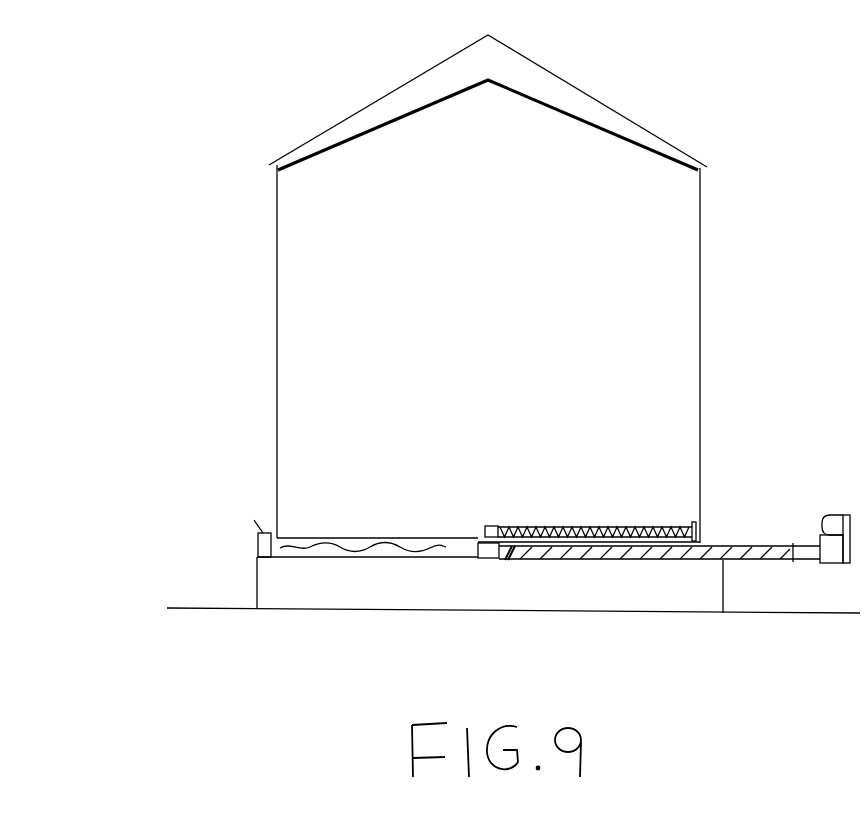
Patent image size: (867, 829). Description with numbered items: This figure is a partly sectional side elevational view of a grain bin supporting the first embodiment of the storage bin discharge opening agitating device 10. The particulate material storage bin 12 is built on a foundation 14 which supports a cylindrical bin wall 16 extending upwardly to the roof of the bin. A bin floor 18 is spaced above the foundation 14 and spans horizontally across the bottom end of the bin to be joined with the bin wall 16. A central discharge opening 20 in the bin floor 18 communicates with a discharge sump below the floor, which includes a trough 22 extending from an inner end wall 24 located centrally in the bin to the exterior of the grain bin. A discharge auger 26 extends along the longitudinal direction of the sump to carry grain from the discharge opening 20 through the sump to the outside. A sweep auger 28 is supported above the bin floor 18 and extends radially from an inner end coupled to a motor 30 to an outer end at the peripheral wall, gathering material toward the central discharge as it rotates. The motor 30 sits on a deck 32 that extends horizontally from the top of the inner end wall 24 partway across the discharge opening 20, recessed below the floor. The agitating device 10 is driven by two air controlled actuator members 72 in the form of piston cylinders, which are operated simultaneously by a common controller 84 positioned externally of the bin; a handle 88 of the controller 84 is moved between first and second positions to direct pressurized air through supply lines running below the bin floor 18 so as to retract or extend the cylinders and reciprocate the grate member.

The storage bin discharge opening agitating device 10 is at (510, 560).
The particulate material storage bin 12 is at (727, 208).
The foundation 14 is at (257, 593).
The bin wall 16 is at (702, 273).
The bin floor 18 is at (322, 532).
The central discharge opening 20 is at (498, 515).
The trough 22 is at (637, 561).
The inner end wall 24 is at (481, 559).
The discharge auger 26 is at (590, 561).
The sweep auger 28 is at (620, 522).
The motor 30 is at (487, 526).
The deck 32 is at (477, 547).
The actuator member 72 is at (456, 538).
The common controller 84 is at (257, 552).
The handle 88 is at (257, 528).